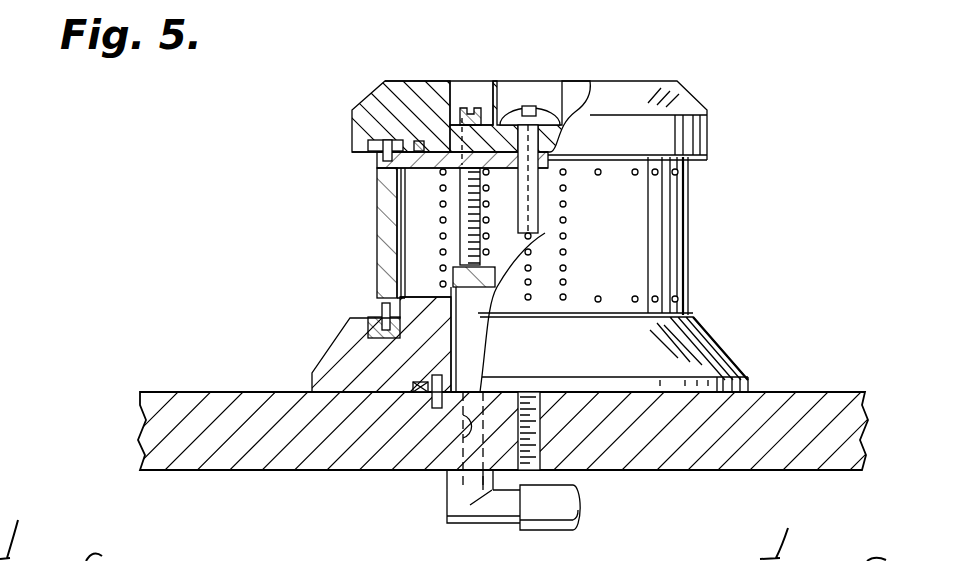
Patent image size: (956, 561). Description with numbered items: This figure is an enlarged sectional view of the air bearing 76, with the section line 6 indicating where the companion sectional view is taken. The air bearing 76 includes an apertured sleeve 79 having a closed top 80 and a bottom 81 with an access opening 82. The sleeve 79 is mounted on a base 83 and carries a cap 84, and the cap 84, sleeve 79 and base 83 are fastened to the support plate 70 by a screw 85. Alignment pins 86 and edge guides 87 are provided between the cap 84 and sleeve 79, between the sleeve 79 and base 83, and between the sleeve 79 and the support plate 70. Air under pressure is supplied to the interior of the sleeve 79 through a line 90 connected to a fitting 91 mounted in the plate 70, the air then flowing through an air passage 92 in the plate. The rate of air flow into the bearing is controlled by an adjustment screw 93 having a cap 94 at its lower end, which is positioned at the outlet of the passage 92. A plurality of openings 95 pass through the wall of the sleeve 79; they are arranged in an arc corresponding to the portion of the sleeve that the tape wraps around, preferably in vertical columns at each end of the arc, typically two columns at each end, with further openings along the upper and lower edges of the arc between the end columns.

The support plate 70 is at (188, 410).
The air bearing 76 is at (737, 163).
The apertured sleeve 79 is at (378, 232).
The closed top 80 is at (440, 151).
The bottom 81 is at (406, 297).
The access opening 82 is at (454, 337).
The base 83 is at (697, 357).
The cap 84 is at (628, 93).
The screw 85 is at (543, 96).
The alignment pins 86 is at (384, 140).
The edge guides 87 is at (368, 318).
The line 90 is at (560, 504).
The fitting 91 is at (468, 514).
The air passage 92 is at (460, 445).
The adjustment screw 93 is at (463, 187).
The cap 94 is at (488, 293).
The openings 95 is at (566, 191).
The section line 6- 6 is at (275, 216).